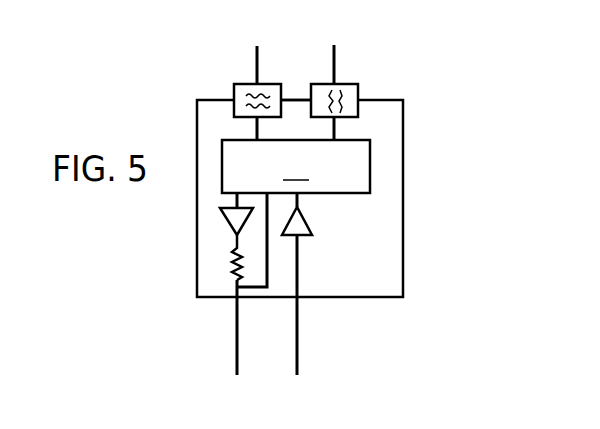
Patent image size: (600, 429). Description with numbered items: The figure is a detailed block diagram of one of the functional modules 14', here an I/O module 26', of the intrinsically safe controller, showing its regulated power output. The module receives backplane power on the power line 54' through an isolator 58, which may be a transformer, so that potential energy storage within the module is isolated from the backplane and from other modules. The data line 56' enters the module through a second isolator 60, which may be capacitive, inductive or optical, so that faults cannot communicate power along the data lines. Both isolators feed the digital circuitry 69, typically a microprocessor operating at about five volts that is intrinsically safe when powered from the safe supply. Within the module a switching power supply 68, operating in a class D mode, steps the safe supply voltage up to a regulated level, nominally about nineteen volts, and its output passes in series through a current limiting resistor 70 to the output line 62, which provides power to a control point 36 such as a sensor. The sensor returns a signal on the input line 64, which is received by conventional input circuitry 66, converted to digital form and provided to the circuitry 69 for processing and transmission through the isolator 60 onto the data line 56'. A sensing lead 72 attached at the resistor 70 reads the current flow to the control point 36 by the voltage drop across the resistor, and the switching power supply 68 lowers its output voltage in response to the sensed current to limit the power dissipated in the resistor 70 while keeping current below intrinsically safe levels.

The functional module 14' is at (359, 198).
The I/O module 26' is at (359, 198).
The control point 36 is at (220, 388).
The backplane power line 54' is at (287, 76).
The data line 56' is at (369, 70).
The isolator 58 is at (234, 90).
The isolator 60 is at (358, 92).
The output line 62 is at (237, 327).
The input line 64 is at (297, 335).
The input circuitry 66 is at (313, 230).
The switching power supply 68 is at (226, 222).
The digital circuitry 69 is at (296, 166).
The current limiting resistor 70 is at (233, 257).
The sensing lead 72 is at (255, 288).